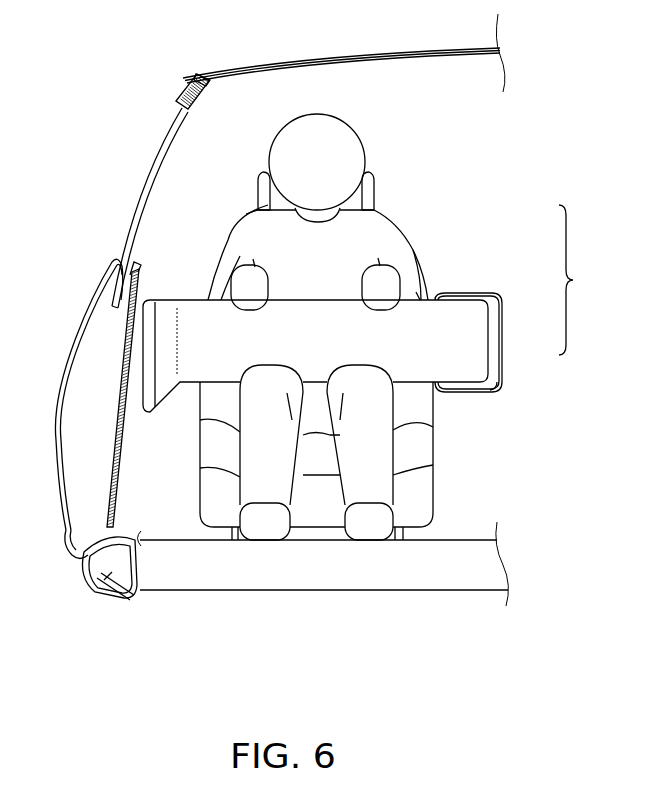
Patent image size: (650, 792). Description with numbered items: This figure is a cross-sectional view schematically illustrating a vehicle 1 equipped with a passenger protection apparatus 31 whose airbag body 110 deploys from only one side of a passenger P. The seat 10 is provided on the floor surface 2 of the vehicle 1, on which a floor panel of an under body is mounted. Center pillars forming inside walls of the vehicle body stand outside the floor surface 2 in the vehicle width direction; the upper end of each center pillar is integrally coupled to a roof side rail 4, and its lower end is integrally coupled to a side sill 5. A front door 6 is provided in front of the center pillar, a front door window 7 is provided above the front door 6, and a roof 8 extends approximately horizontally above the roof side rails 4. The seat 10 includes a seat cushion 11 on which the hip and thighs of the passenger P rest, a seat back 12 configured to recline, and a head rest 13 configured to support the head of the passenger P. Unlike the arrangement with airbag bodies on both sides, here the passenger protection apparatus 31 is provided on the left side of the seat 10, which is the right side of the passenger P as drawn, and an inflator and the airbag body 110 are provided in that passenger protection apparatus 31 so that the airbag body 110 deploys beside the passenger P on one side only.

The vehicle 1 is at (406, 44).
The floor surface 2 is at (235, 578).
The roof side rail 4 is at (176, 100).
The side sill 5 is at (100, 582).
The front door 6 is at (78, 497).
The front door window 7 is at (148, 183).
The roof 8 is at (204, 76).
The seat 10 is at (400, 356).
The seat cushion 11 is at (418, 440).
The seat back 12 is at (438, 297).
The head rest 13 is at (376, 194).
The passenger protection apparatus 31 is at (497, 382).
The airbag body 110 is at (195, 310).
The passenger P is at (345, 158).